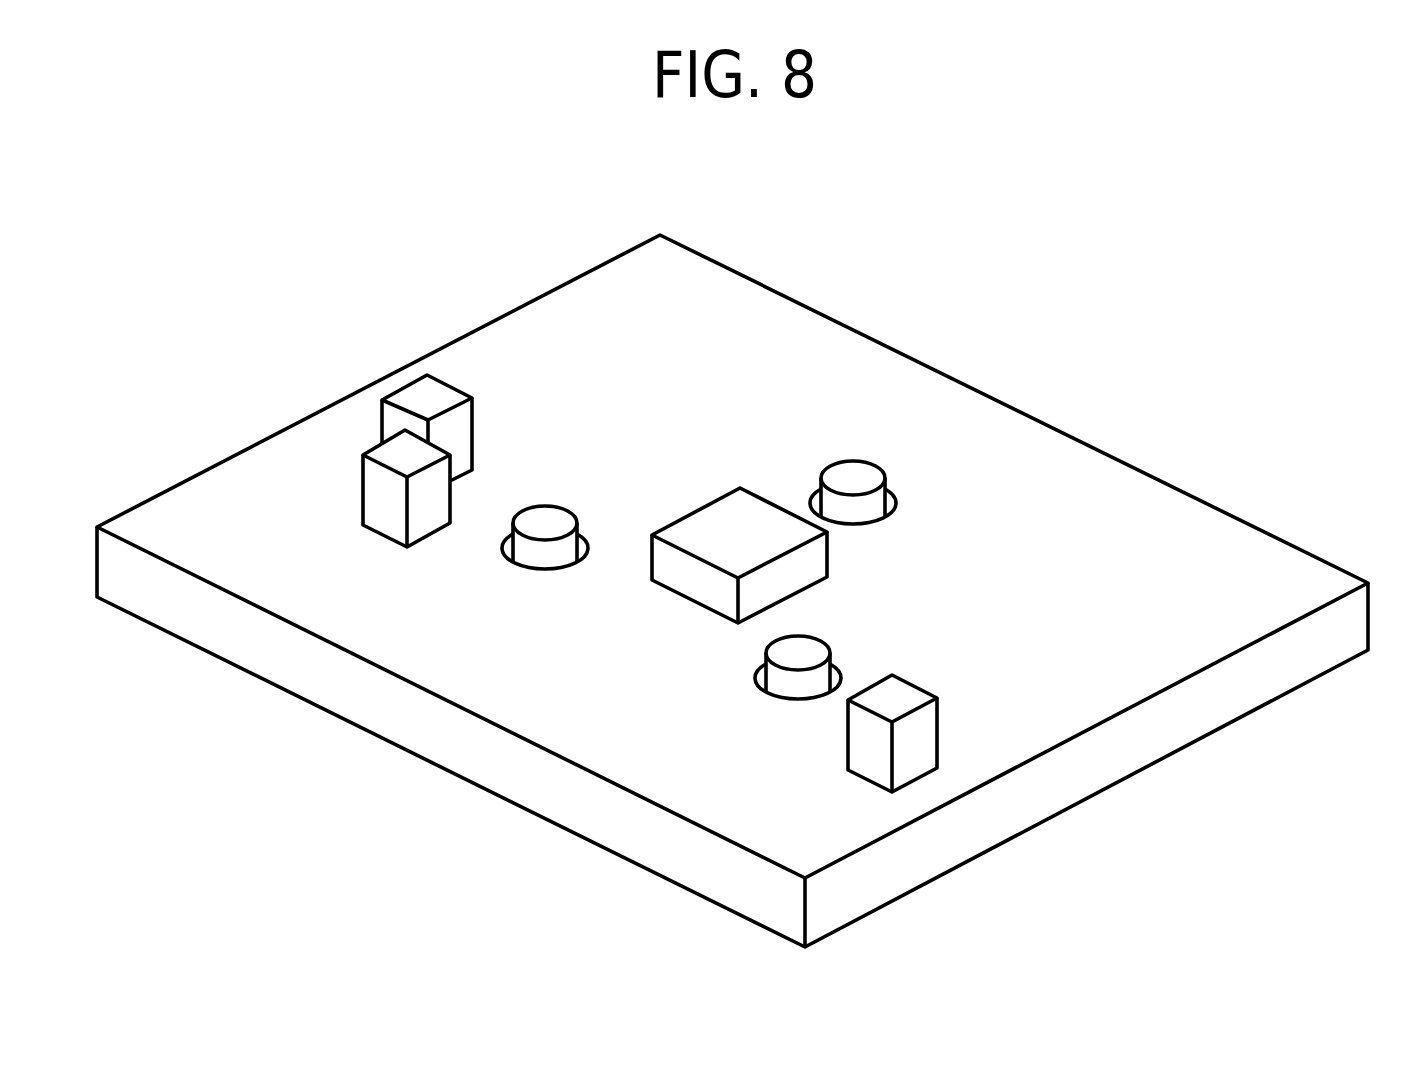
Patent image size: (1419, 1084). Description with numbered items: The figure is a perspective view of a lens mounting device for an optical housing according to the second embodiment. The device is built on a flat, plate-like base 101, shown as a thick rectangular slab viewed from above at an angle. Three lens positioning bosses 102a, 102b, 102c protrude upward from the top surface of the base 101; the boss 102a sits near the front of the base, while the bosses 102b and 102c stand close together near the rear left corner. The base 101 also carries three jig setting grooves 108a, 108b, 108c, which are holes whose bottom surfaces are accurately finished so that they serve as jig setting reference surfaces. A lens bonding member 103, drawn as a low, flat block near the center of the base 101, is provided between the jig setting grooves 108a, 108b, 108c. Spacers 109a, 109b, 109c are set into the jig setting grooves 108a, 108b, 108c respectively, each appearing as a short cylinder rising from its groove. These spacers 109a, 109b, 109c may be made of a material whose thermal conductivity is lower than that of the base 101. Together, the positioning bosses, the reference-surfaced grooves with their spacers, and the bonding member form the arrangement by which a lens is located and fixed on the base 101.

The base 101 is at (1128, 683).
The lens positioning boss 102a is at (920, 732).
The lens positioning boss 102b is at (375, 485).
The lens positioning boss 102c is at (443, 390).
The lens bonding member 103 is at (752, 508).
The jig setting groove 108a is at (790, 698).
The jig setting groove 108b is at (540, 567).
The jig setting groove 108c is at (895, 497).
The spacer 109a is at (813, 648).
The spacer 109b is at (545, 513).
The spacer 109c is at (853, 472).